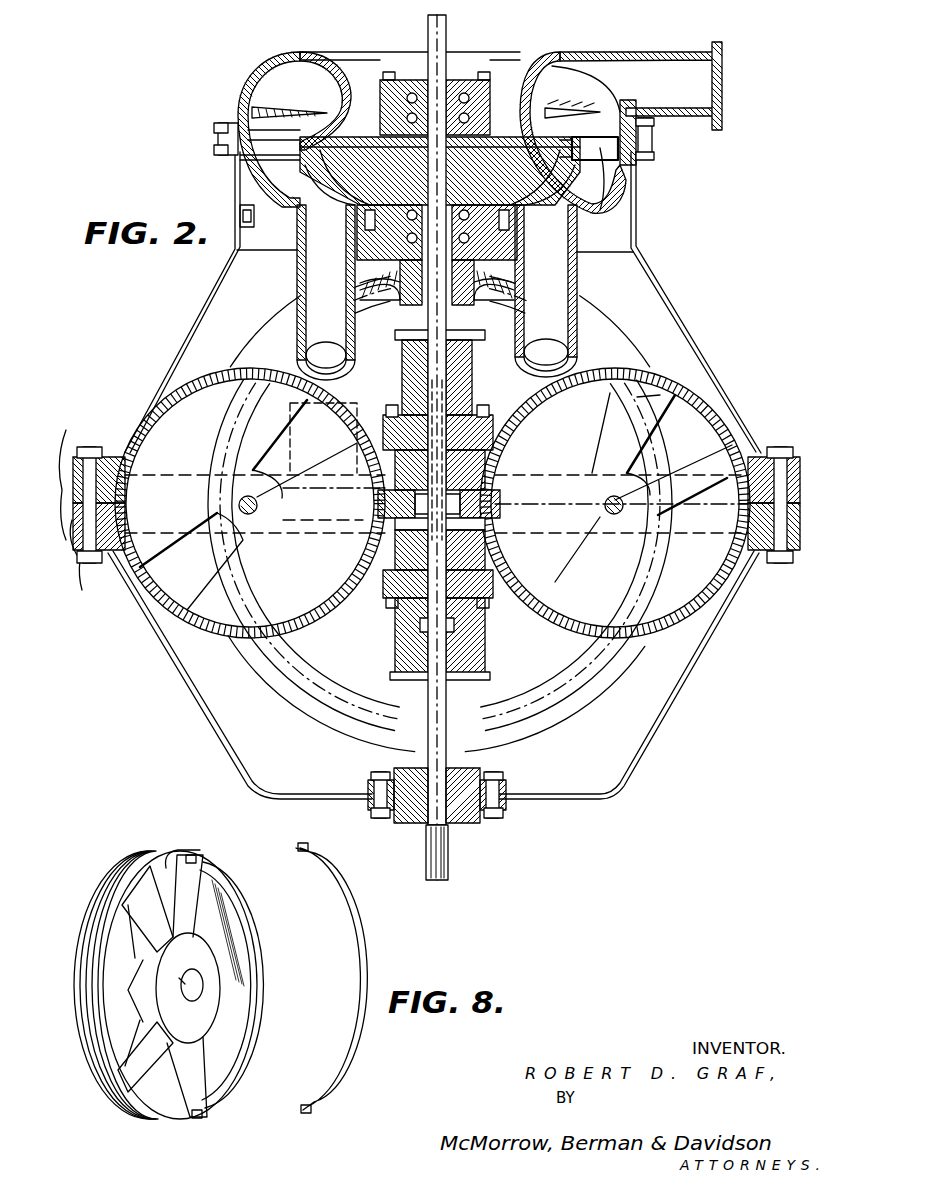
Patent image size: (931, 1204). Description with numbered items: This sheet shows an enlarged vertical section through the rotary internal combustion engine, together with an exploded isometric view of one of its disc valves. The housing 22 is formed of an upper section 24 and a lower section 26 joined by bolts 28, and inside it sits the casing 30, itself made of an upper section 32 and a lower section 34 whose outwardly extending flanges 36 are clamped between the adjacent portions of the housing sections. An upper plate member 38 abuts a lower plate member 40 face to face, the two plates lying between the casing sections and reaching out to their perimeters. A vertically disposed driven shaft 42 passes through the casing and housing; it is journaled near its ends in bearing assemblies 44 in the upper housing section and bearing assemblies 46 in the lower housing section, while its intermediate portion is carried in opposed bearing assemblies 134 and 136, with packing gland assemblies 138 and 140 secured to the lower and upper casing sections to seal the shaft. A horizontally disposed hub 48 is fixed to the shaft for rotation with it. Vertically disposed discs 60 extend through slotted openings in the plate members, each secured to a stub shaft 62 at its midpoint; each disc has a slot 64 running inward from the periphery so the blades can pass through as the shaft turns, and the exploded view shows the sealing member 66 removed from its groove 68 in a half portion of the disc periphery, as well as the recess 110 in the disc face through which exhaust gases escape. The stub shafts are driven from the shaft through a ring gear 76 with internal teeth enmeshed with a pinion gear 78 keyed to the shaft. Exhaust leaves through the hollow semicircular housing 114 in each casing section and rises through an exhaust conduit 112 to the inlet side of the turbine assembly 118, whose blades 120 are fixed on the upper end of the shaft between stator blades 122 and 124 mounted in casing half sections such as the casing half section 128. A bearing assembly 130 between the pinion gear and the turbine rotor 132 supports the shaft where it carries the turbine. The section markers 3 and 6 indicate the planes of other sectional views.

In FIG. 2, the section line 3- 3 is at (446, 15).
In FIG. 2, the section line 6- 6 is at (617, 350).
In FIG. 2, the housing 22 is at (139, 375).
In FIG. 2, the upper section 24 is at (142, 402).
In FIG. 2, the lower section 26 is at (142, 612).
In FIG. 2, the bolts 28 is at (120, 572).
In FIG. 2, the casing 30 is at (219, 358).
In FIG. 2, the upper section 32 is at (384, 430).
In FIG. 2, the lower section 34 is at (374, 598).
In FIG. 2, the flanges 36 is at (77, 493).
In FIG. 2, the upper plate member 38 is at (120, 478).
In FIG. 2, the lower plate member 40 is at (120, 512).
In FIG. 2, the driven shaft 42 is at (447, 696).
In FIG. 2, the bearing assemblies 44 is at (488, 78).
In FIG. 2, the bearing assemblies 46 is at (470, 822).
In FIG. 2, the hub 48 is at (500, 475).
In FIG. 2, the discs 60 is at (298, 583).
In FIG. 8, the discs 60 is at (208, 962).
In FIG. 2, the stub shaft 62 is at (268, 492).
In FIG. 8, the slot 64 is at (341, 838).
In FIG. 8, the sealing member 66 is at (352, 925).
In FIG. 8, the groove 68 is at (200, 1118).
In FIG. 2, the ring gear 76 is at (496, 300).
In FIG. 2, the pinion gear 78 is at (508, 258).
In FIG. 8, the recess 110 is at (240, 1025).
In FIG. 2, the exhaust conduit 112 is at (300, 272).
In FIG. 2, the hollow semicircular housing 114 is at (182, 393).
In FIG. 2, the turbine assembly 118 is at (600, 52).
In FIG. 2, the blades 120 is at (567, 117).
In FIG. 2, the stator blades 122 is at (610, 122).
In FIG. 2, the stator blades 124 is at (608, 176).
In FIG. 2, the casing half section 128 is at (556, 56).
In FIG. 2, the bearing assembly 130 is at (455, 180).
In FIG. 2, the rotor 132 is at (455, 152).
In FIG. 2, the bearing assembly 134 is at (505, 565).
In FIG. 2, the bearing assembly 136 is at (490, 440).
In FIG. 2, the packing gland assembly 138 is at (395, 650).
In FIG. 2, the packing gland assembly 140 is at (478, 400).